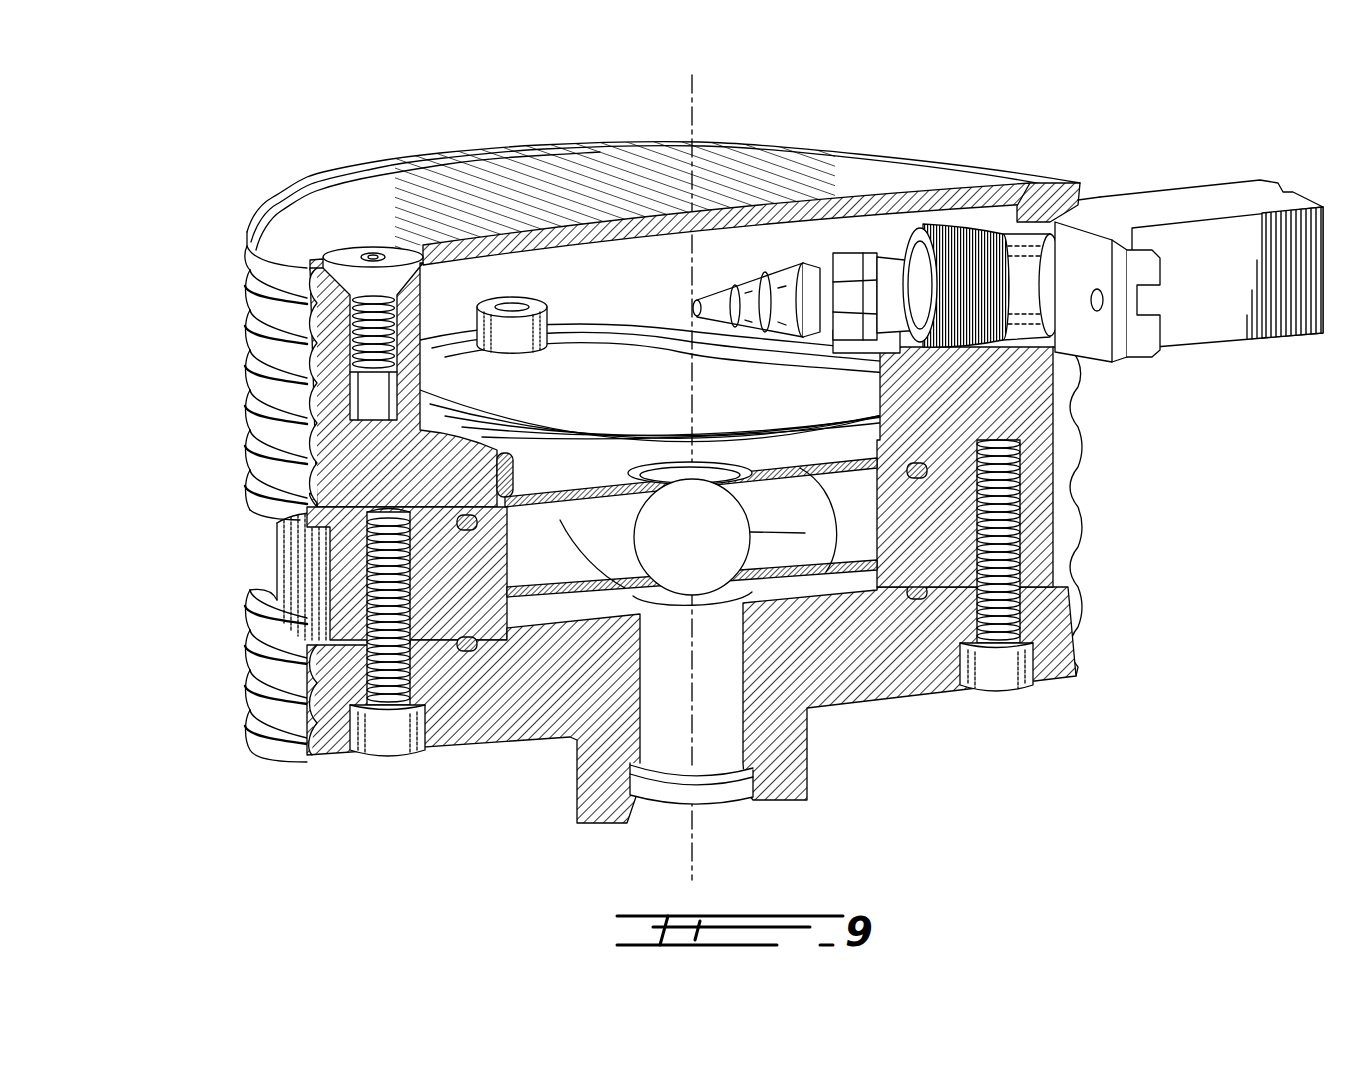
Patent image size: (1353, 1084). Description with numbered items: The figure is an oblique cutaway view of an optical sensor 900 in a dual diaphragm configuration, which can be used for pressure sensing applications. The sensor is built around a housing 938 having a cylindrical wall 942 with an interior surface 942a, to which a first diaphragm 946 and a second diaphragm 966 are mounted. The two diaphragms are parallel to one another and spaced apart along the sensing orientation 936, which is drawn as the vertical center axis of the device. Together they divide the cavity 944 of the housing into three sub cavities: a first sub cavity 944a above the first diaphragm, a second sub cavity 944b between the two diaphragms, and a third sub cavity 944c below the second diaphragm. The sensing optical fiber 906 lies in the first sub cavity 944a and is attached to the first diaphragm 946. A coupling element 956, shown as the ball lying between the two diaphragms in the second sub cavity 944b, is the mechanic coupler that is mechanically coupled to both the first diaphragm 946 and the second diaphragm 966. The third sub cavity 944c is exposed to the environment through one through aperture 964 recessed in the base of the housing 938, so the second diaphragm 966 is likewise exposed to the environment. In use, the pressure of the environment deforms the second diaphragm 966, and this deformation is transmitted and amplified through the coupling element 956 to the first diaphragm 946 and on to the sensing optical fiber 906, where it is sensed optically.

The optical sensor 900 is at (213, 142).
The sensing optical fiber 906 is at (598, 425).
The sensing orientation 936 is at (696, 90).
The housing 938 is at (1063, 180).
The cavity 944 is at (853, 490).
The first sub cavity 944a is at (507, 403).
The second sub cavity 944b is at (430, 507).
The third sub cavity 944c is at (530, 617).
The cylindrical wall 942 is at (933, 527).
The interior surface 942a is at (945, 550).
The first diaphragm 946 is at (810, 475).
The ball 956 is at (660, 535).
The through aperture 964 is at (723, 748).
The second diaphragm 966 is at (782, 573).